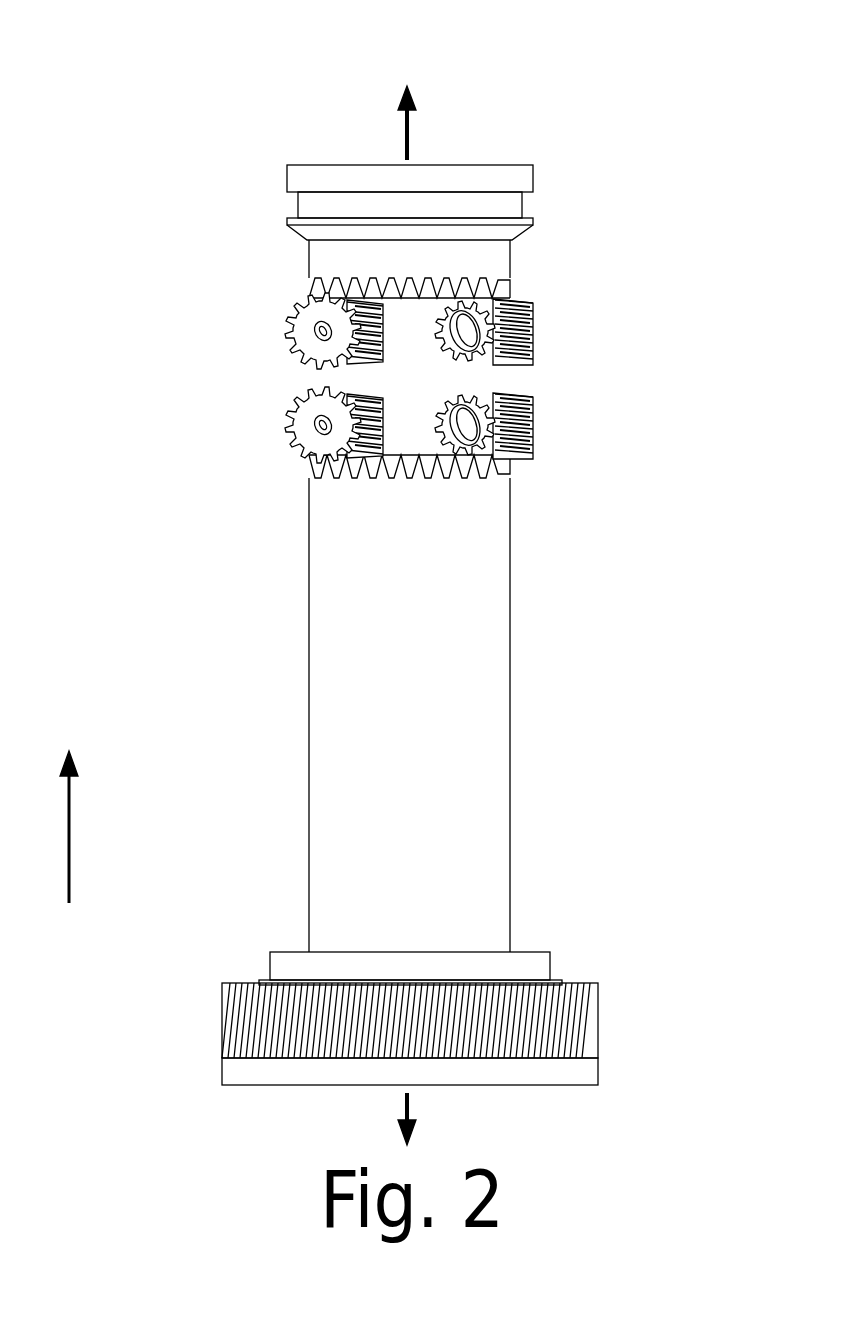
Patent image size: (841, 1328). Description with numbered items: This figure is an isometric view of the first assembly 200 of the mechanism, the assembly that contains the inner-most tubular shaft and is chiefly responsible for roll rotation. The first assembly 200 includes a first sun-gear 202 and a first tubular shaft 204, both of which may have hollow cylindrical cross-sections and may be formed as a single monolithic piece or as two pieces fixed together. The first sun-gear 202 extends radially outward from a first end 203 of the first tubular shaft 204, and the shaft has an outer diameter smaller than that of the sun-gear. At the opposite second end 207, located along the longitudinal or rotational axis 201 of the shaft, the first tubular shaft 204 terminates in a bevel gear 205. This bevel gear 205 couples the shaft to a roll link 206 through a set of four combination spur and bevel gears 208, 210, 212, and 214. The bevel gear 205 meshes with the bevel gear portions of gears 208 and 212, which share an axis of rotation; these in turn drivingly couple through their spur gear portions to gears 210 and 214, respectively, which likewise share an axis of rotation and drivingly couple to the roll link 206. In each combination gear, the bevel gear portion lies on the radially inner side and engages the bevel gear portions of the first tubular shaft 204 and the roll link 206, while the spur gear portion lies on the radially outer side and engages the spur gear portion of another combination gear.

The first assembly 200 is at (111, 71).
The axis of rotation 201 is at (418, 140).
The first sun-gear 202 is at (612, 1037).
The first end 203 is at (529, 944).
The first tubular shaft 204 is at (525, 723).
The bevel gear 205 is at (467, 480).
The roll link 206 is at (281, 195).
The second end 207 is at (299, 494).
The combination spur and bevel gear 208 is at (283, 438).
The combination spur and bevel gear 210 is at (283, 318).
The combination spur and bevel gear 212 is at (538, 440).
The combination spur and bevel gear 214 is at (540, 333).